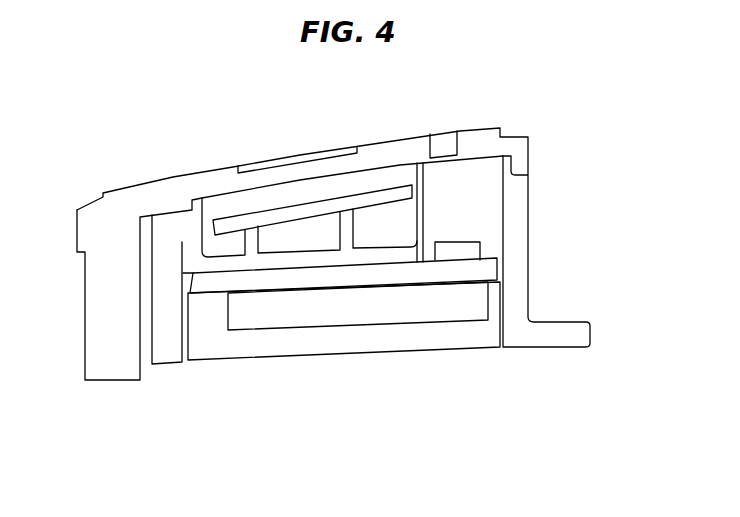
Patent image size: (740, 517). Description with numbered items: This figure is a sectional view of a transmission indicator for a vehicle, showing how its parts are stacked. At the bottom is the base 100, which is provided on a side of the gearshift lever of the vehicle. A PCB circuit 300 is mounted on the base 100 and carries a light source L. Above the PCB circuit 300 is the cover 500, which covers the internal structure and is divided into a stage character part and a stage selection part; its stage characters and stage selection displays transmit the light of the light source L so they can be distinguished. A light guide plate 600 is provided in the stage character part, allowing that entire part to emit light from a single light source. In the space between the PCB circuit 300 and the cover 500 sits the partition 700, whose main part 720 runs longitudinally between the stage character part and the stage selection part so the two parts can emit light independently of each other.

The base 100 is at (358, 340).
The PCB circuit 300 is at (437, 273).
The cover 500 is at (170, 195).
The light guide plate 600 is at (292, 212).
The partition 700 is at (288, 271).
The main part 720 is at (420, 202).
The light source L is at (477, 247).